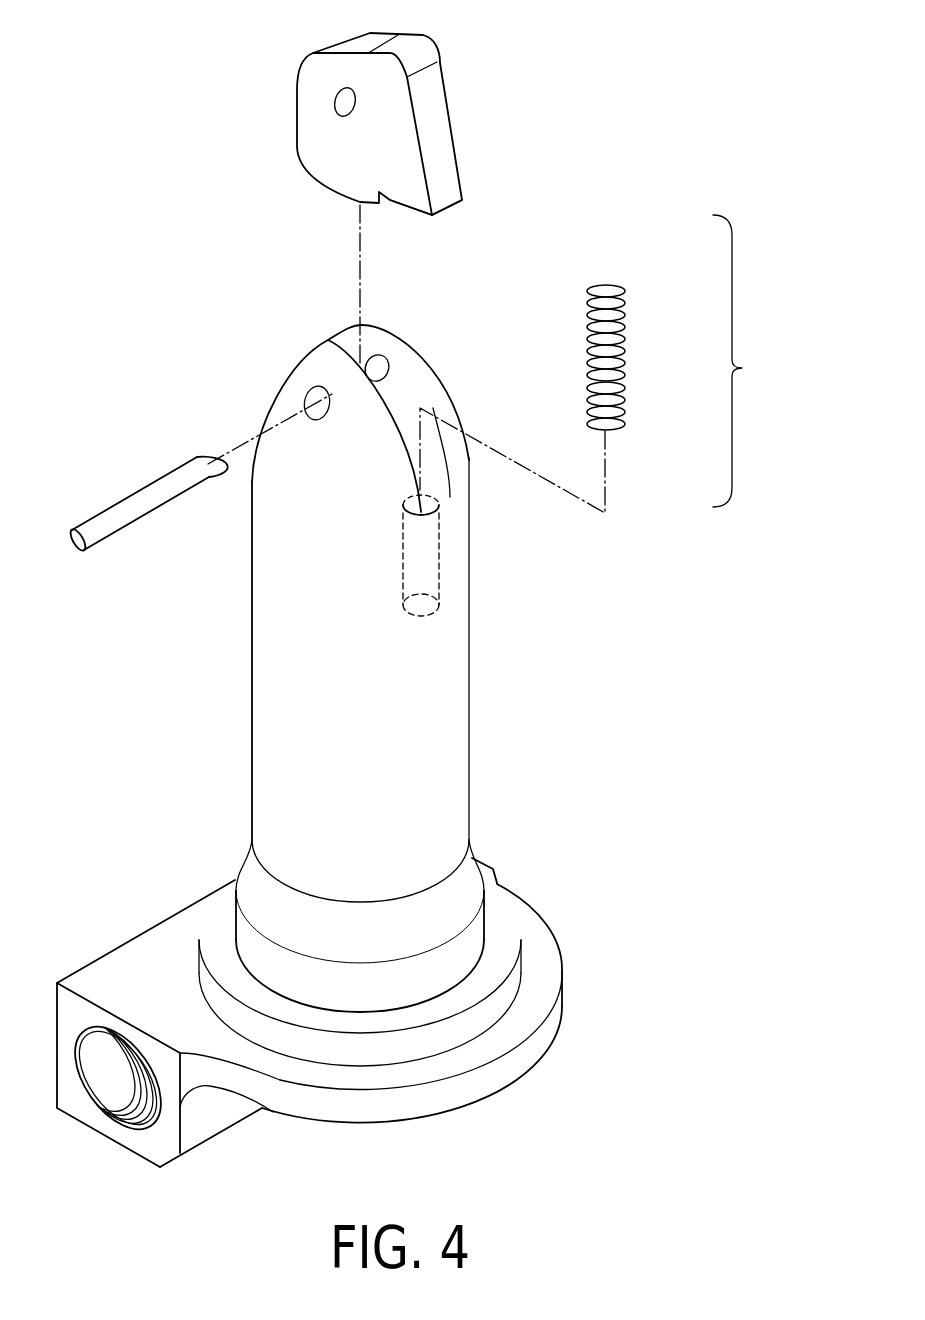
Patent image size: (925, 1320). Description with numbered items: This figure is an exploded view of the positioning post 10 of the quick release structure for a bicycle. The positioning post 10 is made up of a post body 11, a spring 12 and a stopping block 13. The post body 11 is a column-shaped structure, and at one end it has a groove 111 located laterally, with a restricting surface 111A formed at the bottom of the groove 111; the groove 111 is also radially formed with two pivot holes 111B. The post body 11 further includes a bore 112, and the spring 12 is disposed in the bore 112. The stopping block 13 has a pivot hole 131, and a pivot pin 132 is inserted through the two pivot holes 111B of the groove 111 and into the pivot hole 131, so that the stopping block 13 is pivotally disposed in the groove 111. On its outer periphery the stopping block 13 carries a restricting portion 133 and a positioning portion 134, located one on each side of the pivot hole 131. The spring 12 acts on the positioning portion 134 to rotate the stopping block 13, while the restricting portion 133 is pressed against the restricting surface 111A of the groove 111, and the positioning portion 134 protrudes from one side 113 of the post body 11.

The positioning post 10 is at (747, 361).
The post body 11 is at (370, 740).
The groove 111 is at (407, 380).
The restricting surface 111A is at (450, 496).
The pivot holes 111B is at (313, 392).
The bore 112 is at (427, 570).
The side of the post body 113 is at (264, 733).
The spring 12 is at (625, 350).
The stopping block 13 is at (381, 292).
The pivot hole 131 is at (337, 92).
The pivot pin 132 is at (145, 492).
The restricting portion 133 is at (310, 150).
The positioning portion 134 is at (447, 197).